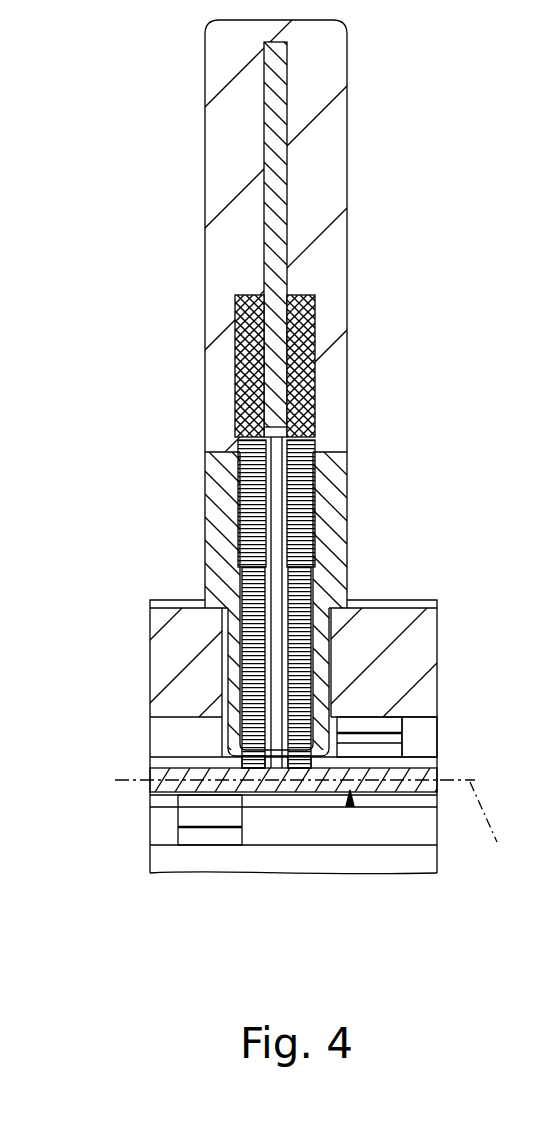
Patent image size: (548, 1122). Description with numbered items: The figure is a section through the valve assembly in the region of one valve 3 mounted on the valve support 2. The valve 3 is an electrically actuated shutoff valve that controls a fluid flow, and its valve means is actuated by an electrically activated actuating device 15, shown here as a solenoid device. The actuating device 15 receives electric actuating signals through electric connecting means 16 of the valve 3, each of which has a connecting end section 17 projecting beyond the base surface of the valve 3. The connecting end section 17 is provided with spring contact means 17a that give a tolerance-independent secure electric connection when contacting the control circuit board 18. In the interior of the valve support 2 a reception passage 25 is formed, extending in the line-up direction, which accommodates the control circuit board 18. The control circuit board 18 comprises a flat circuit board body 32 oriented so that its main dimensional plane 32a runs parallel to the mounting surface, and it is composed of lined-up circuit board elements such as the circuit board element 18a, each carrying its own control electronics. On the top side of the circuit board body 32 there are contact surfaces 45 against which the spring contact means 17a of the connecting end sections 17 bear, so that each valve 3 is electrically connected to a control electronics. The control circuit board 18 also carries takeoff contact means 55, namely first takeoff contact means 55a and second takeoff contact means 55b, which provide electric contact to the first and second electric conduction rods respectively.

The valve support 2 is at (415, 640).
The electrically actuated valve 3 is at (320, 57).
The actuating device 15 is at (275, 327).
The electric connecting means 16 is at (297, 676).
The connecting end section 17 is at (170, 667).
The spring contact means 17a is at (297, 748).
The control circuit board 18 is at (399, 863).
The circuit board element 18a is at (352, 802).
The reception passage 25 is at (420, 742).
The circuit board body 32 is at (160, 790).
The main dimensional plane 32a is at (318, 827).
The contact surface 45 is at (297, 778).
The takeoff contact means 55 is at (392, 654).
The first takeoff contact means 55a is at (358, 740).
The second takeoff contact means 55b is at (202, 818).